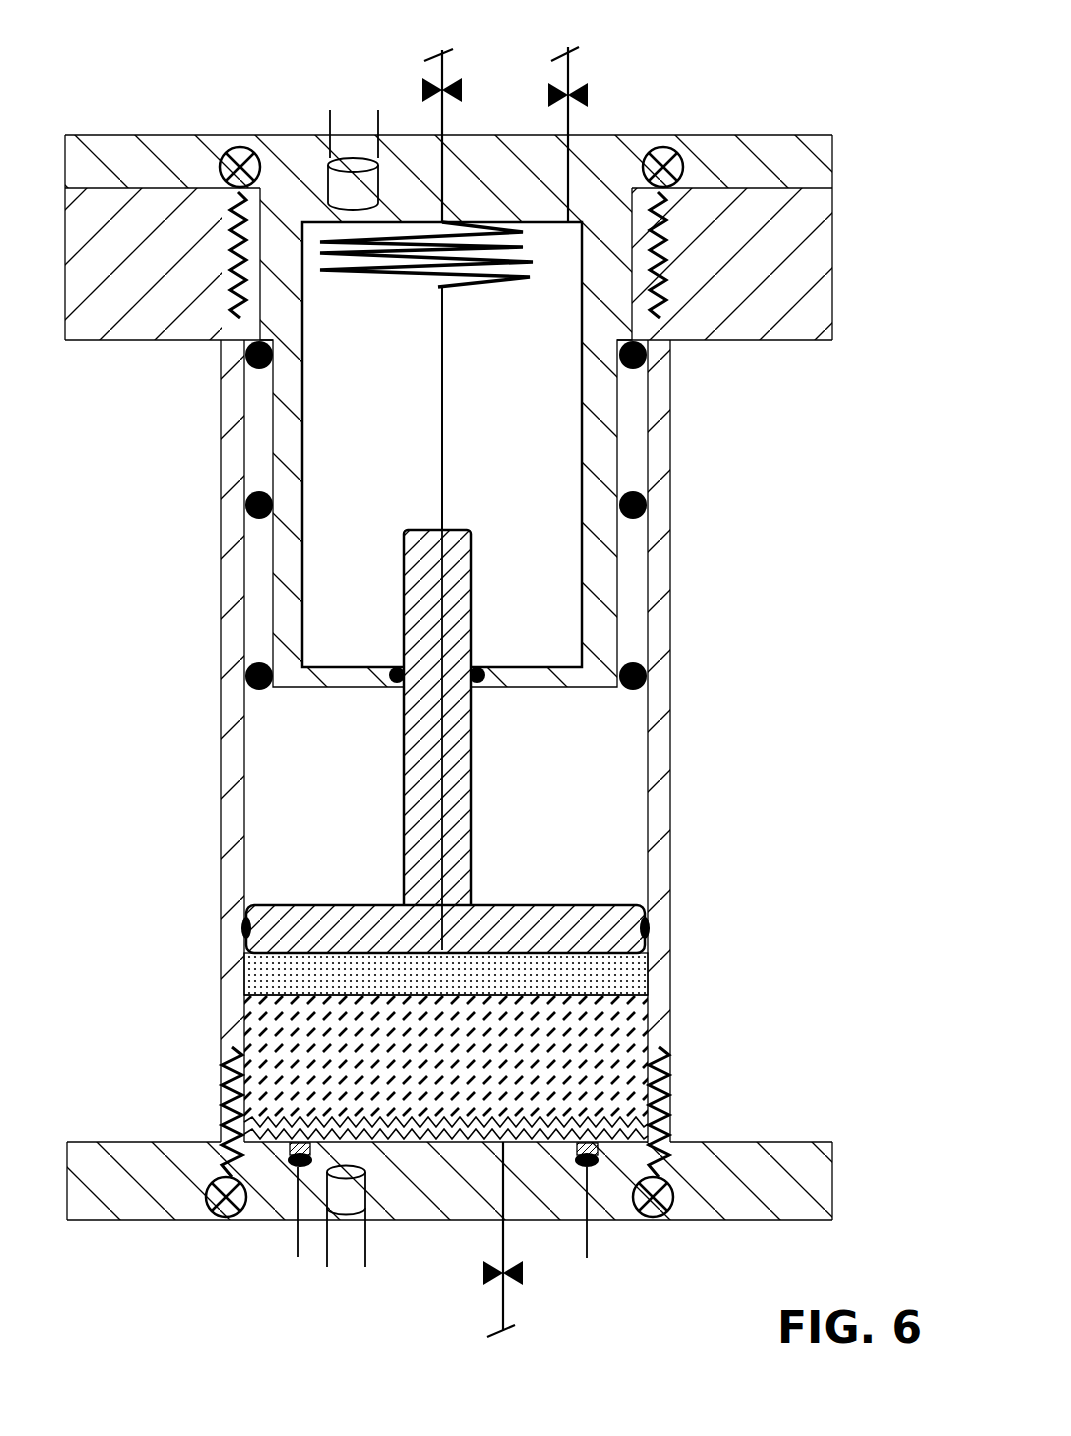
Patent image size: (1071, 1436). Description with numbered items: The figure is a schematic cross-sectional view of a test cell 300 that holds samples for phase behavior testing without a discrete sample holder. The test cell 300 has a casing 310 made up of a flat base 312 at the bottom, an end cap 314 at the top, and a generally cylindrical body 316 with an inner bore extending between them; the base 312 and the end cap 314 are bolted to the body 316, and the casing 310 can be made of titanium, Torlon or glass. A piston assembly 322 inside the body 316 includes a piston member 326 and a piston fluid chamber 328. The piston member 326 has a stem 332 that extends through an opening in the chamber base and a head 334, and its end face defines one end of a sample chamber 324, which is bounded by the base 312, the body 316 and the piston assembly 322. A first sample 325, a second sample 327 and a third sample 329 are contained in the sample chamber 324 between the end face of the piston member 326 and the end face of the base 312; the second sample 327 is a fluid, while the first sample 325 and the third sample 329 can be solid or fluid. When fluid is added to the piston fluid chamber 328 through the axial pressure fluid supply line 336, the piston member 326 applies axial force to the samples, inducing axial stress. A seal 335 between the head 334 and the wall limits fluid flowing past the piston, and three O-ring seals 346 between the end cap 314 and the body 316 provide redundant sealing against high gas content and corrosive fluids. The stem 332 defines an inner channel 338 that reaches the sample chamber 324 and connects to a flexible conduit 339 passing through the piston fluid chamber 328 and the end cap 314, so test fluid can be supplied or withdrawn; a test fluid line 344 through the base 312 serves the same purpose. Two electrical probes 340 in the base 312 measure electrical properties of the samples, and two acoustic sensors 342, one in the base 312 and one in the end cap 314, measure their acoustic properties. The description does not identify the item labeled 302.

The test cell 300 is at (486, 671).
The piston housing 302 is at (448, 411).
The casing 310 is at (485, 651).
The base 312 is at (815, 1175).
The end cap 314 is at (790, 134).
The body 316 is at (671, 768).
The piston assembly 322 is at (456, 620).
The sample chamber 324 is at (635, 1022).
The first sample 325 is at (650, 977).
The piston member 326 is at (485, 778).
The second sample 327 is at (632, 1046).
The piston fluid chamber 328 is at (395, 388).
The third sample 329 is at (634, 1122).
The stem 332 is at (468, 582).
The head 334 is at (244, 913).
The seal 335 is at (650, 925).
The axial pressure fluid supply line 336 is at (570, 158).
The inner channel 338 is at (433, 862).
The conduit 339 is at (438, 488).
The electrical probes 340 is at (287, 1162).
The acoustic sensors 342 is at (335, 183).
The test fluid line 344 is at (505, 1243).
The seals 346 is at (650, 509).